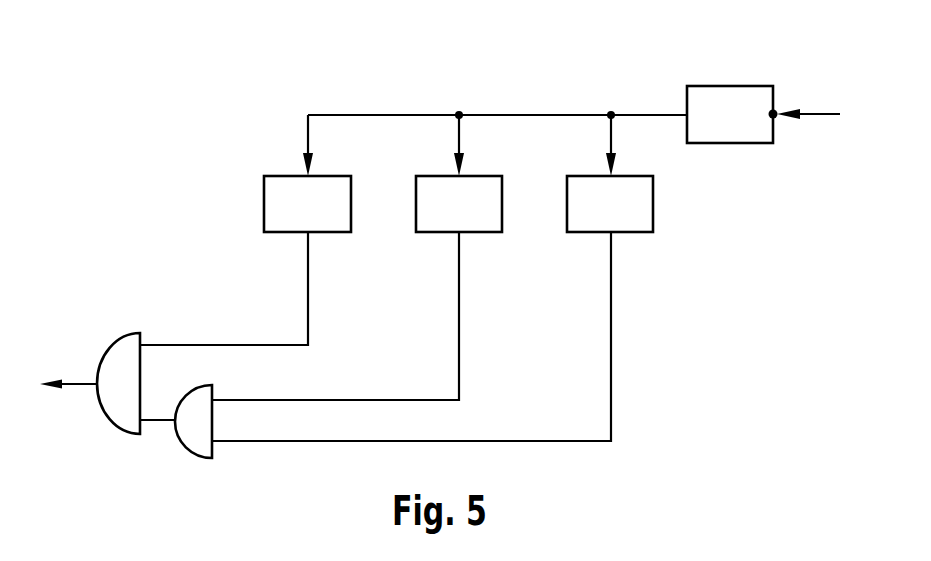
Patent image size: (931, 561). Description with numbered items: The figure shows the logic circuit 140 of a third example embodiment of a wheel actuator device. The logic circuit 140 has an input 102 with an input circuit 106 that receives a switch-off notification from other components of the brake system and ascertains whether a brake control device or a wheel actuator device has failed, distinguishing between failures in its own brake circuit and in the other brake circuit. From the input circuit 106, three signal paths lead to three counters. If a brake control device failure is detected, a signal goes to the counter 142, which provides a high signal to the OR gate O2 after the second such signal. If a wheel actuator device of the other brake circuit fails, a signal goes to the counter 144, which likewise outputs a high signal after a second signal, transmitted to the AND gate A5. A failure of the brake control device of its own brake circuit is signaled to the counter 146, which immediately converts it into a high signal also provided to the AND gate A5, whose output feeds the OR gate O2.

The logic circuit 140 is at (440, 286).
The counter 142 is at (245, 230).
The counter 144 is at (357, 257).
The counter 146 is at (432, 278).
The input circuit 106 is at (730, 144).
The input 102 is at (805, 141).
The OR gate O2 is at (107, 357).
The AND gate A5 is at (184, 442).